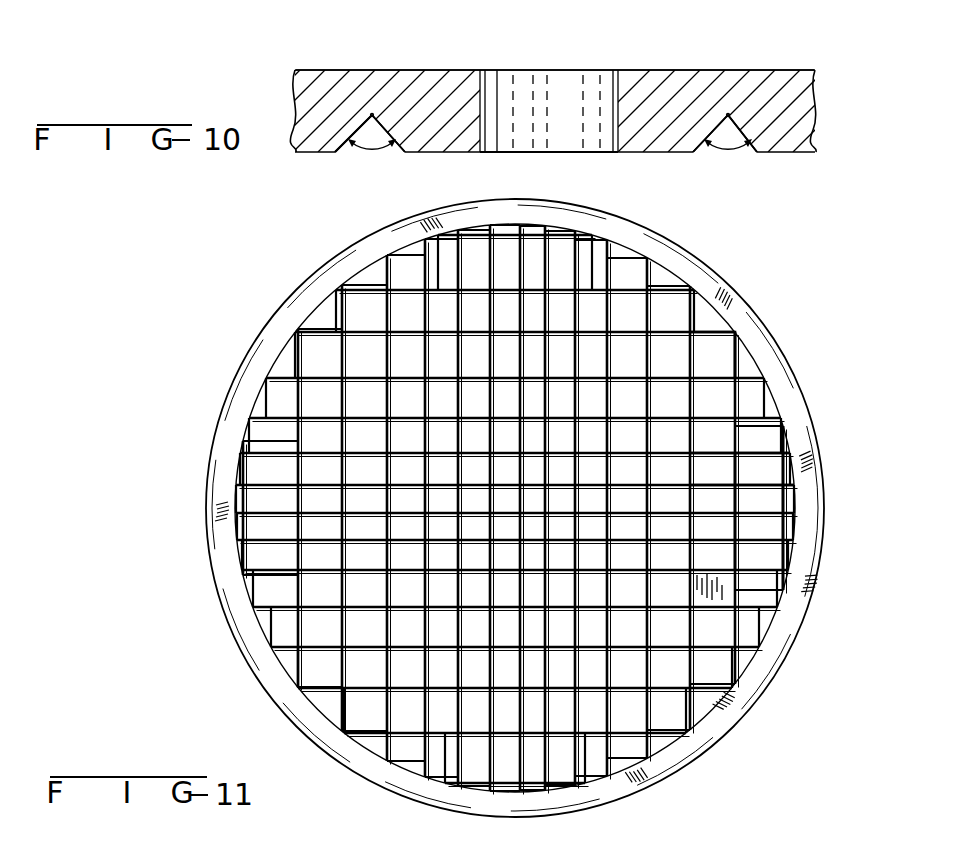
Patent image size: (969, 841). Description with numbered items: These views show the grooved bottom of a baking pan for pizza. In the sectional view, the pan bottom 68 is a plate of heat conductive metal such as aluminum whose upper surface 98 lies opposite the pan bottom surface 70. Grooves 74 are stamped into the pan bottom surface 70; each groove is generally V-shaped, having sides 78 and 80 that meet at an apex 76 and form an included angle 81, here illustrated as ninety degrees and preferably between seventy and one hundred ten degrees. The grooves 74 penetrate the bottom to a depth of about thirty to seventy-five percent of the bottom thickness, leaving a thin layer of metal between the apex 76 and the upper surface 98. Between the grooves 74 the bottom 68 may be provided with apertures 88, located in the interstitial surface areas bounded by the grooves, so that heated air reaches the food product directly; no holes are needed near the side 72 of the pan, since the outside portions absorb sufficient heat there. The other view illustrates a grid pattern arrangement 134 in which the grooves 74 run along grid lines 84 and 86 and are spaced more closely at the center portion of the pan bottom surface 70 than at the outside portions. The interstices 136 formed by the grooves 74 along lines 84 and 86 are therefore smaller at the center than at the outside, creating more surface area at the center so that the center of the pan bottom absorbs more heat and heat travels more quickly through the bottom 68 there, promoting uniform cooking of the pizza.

In FIG. 10, the pan bottom 68 is at (679, 55).
In FIG. 11, the pan bottom 68 is at (200, 533).
In FIG. 10, the pan bottom surface 70 is at (462, 152).
In FIG. 11, the pan bottom surface 70 is at (211, 406).
In FIG. 11, the side 72 is at (222, 470).
In FIG. 10, the grooves 74 is at (383, 158).
In FIG. 11, the grooves 74 is at (345, 318).
In FIG. 10, the apex 76 is at (372, 115).
In FIG. 10, the side 78 is at (357, 125).
In FIG. 10, the side 80 is at (392, 128).
In FIG. 10, the included angle 81 is at (367, 150).
In FIG. 11, the grid lines 84 is at (760, 545).
In FIG. 11, the grid lines 86 is at (772, 497).
In FIG. 10, the apertures 88 is at (540, 97).
In FIG. 10, the upper surface 98 is at (445, 70).
In FIG. 11, the grid pattern arrangement 134 is at (706, 325).
In FIG. 11, the interstices 136 is at (712, 590).